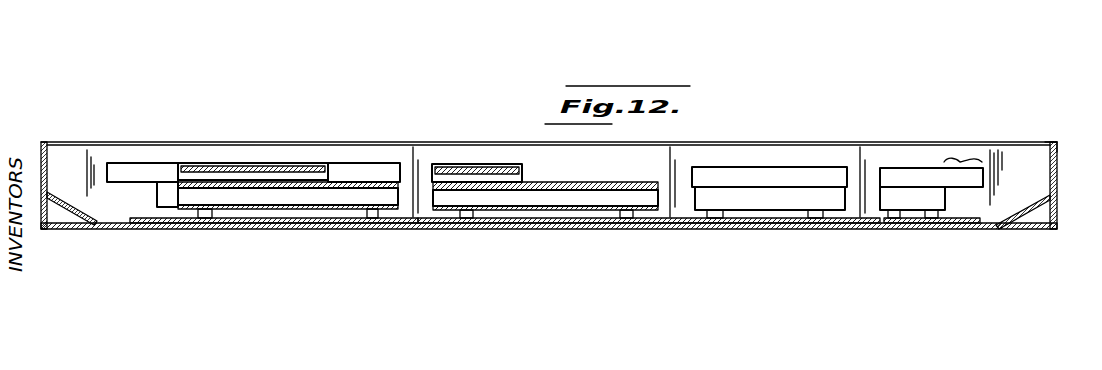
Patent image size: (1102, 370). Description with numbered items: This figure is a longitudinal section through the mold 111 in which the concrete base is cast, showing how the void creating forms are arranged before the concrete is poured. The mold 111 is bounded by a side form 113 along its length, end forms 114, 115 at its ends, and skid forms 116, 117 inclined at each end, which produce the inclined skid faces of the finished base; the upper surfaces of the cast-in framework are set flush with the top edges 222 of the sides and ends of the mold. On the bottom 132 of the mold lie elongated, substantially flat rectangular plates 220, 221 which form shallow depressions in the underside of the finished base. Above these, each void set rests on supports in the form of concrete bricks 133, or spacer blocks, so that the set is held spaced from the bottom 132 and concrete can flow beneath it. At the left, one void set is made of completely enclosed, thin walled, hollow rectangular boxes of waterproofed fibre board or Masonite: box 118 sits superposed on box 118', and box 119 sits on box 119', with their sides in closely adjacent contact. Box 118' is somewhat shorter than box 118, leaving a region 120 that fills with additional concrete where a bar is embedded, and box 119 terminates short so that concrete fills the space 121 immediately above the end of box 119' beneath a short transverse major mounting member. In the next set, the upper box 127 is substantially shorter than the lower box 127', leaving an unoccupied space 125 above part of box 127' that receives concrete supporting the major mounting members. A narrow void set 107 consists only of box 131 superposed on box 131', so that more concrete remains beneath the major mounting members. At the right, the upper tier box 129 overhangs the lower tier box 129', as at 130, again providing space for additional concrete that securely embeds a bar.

The void set 107 is at (745, 165).
The mold 111 is at (246, 140).
The side form 113 is at (110, 148).
The end form 114 is at (46, 142).
The end form 115 is at (1058, 158).
The skid form 116 is at (70, 200).
The skid form 117 is at (1003, 214).
The void creating box 118 is at (142, 143).
The void creating box 118' is at (157, 219).
The void creating box 119 is at (253, 145).
The void creating box 119' is at (288, 219).
The region for additional concrete 120 is at (128, 193).
The space 121 is at (374, 178).
The unoccupied space 125 is at (593, 181).
The void creating box 127 is at (477, 145).
The void creating box 127' is at (545, 171).
The void creating box 129 is at (931, 152).
The void creating box 129' is at (916, 226).
The overhang 130 is at (948, 150).
The box 131 is at (770, 154).
The box 131' is at (776, 226).
The bottom 132 is at (575, 226).
The concrete bricks 133 is at (204, 218).
The depression forming plate 220 is at (248, 223).
The depression forming plate 221 is at (495, 223).
The top edges 222 is at (1052, 150).